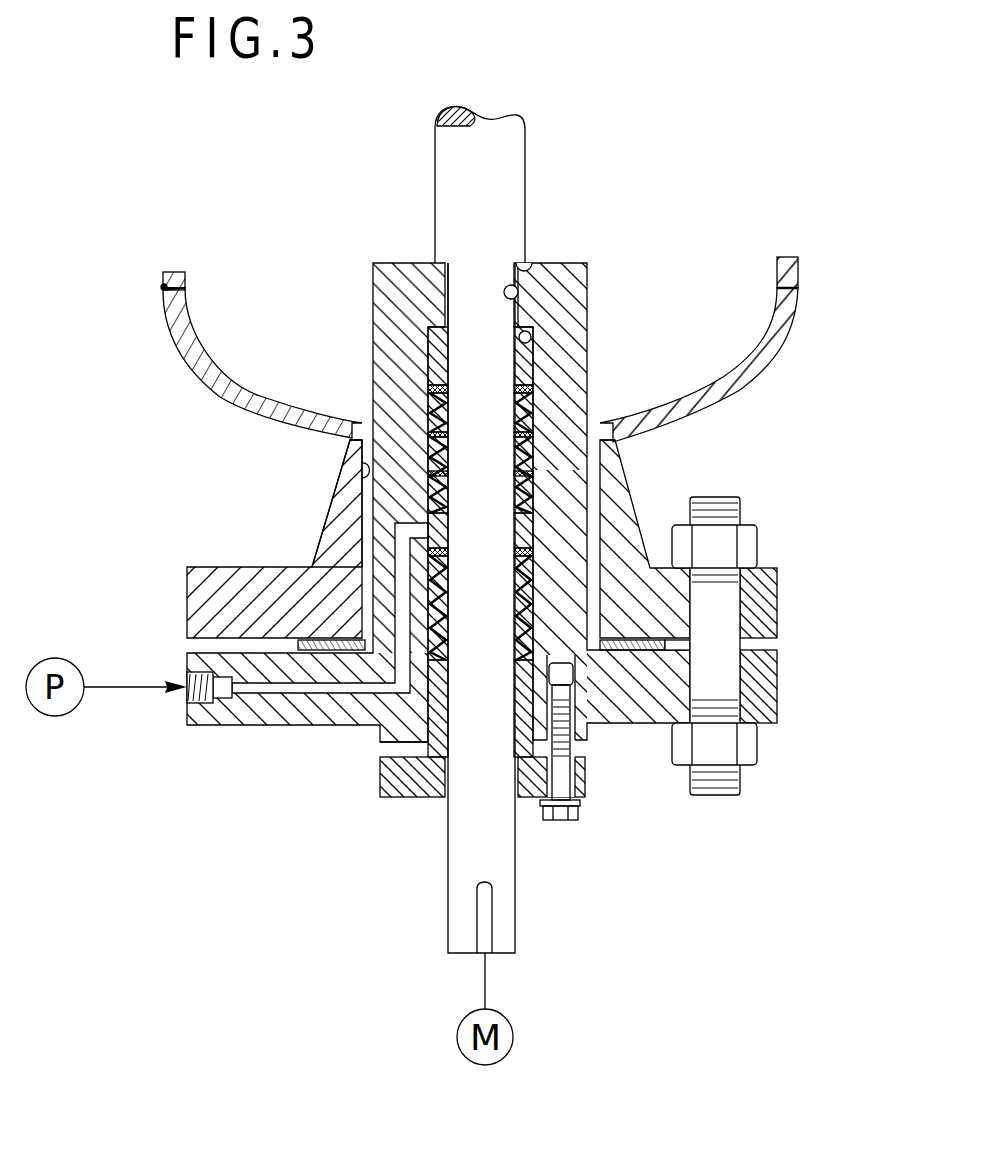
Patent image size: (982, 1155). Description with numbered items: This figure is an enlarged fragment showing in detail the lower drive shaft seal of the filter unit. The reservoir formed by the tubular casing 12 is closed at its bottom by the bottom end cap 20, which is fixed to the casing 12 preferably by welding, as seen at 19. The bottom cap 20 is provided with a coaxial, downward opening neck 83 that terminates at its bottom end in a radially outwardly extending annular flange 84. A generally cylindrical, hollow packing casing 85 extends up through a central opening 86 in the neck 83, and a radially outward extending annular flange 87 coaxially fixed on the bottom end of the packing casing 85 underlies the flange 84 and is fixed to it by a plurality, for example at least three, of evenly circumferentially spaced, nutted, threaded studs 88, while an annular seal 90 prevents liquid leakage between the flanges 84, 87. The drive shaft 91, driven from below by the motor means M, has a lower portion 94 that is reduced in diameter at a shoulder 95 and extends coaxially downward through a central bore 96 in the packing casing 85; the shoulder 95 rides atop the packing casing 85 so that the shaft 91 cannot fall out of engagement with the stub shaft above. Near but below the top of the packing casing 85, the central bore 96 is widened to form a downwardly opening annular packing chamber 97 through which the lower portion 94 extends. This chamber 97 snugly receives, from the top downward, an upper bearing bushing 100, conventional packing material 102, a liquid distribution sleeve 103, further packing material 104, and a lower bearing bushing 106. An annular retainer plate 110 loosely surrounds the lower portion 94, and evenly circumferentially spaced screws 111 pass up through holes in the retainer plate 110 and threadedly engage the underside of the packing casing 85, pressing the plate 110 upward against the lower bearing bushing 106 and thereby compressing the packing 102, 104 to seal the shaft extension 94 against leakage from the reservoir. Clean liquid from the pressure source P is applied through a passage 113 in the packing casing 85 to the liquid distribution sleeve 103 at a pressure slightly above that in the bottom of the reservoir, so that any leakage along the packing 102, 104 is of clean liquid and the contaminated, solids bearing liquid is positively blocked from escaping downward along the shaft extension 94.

The tubular casing 12 is at (796, 268).
The weld 19 is at (800, 289).
The bottom end cap 20 is at (770, 368).
The neck 83 is at (322, 542).
The annular flange 84 is at (227, 570).
The packing casing 85 is at (592, 346).
The central opening 86 is at (362, 470).
The annular flange 87 is at (774, 688).
The nutted threaded studs 88 is at (718, 787).
The annular seal 90 is at (642, 652).
The drive shaft 91 is at (520, 195).
The lower portion of the drive shaft 94 is at (515, 915).
The shoulder 95 is at (522, 270).
The central bore 96 is at (516, 294).
The annular packing chamber 97 is at (530, 340).
The upper bearing bushing 100 is at (527, 368).
The packing material 102 is at (533, 423).
The liquid distribution sleeve 103 is at (533, 500).
The further packing material 104 is at (533, 568).
The lower bearing bushing 106 is at (392, 748).
The annular retainer plate 110 is at (408, 793).
The screws 111 is at (574, 810).
The passage 113 is at (272, 690).